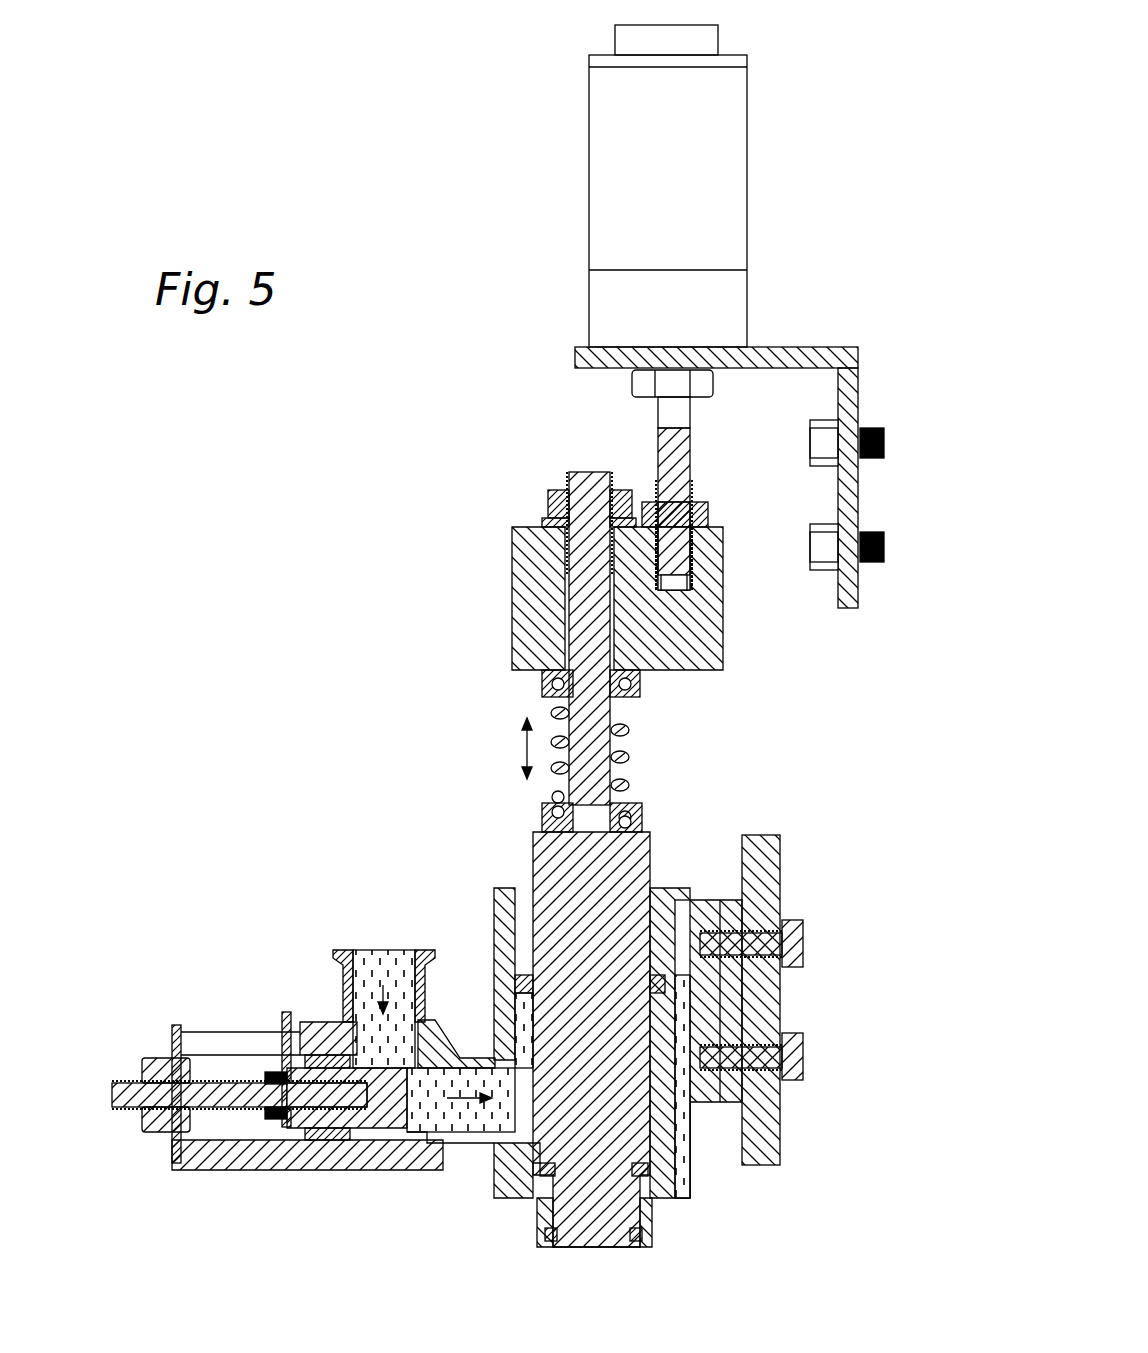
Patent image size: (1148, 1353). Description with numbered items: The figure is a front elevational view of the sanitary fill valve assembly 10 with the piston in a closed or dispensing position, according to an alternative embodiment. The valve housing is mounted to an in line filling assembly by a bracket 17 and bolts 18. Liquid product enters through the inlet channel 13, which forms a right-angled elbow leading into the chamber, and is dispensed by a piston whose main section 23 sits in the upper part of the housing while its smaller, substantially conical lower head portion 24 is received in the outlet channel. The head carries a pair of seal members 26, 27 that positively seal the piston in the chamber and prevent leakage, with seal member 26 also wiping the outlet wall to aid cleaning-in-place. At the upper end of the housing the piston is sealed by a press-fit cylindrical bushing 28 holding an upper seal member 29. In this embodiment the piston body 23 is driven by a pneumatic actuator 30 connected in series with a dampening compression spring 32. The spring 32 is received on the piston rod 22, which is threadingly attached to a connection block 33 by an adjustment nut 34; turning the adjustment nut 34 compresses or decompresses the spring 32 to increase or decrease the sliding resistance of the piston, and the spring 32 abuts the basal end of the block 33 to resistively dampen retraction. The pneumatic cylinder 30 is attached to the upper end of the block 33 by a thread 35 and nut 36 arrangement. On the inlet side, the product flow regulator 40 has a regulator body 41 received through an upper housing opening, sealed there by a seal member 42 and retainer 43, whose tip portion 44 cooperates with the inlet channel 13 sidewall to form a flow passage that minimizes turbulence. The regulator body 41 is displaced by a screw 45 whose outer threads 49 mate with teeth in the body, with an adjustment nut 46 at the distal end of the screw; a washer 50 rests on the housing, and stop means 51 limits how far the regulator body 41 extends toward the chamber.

The sanitary fill valve assembly 10 is at (212, 856).
The inlet passage or channel 13 is at (343, 982).
The bracket 17 is at (781, 1150).
The bolts 18 is at (804, 1056).
The piston rod 22 is at (572, 486).
The main section of piston body 23 is at (534, 872).
The lower head portion 24 is at (608, 1249).
The seal member 26 is at (540, 1237).
The seal member 27 is at (647, 1172).
The cylindrical bushing 28 is at (660, 892).
The upper seal member 29 is at (522, 982).
The pneumatic actuator 30 is at (590, 238).
The compression spring 32 is at (630, 758).
The connection block 33 is at (516, 592).
The adjustment nut 34 is at (541, 500).
The thread 35 is at (655, 452).
The nut 36 is at (700, 512).
The product flow regulator 40 is at (138, 1191).
The regulator body 41 is at (375, 1172).
The seal member 42 is at (335, 1172).
The retainer 43 is at (288, 1172).
The tip portion 44 is at (412, 1078).
The screw 45 is at (113, 1085).
The adjustment nut 46 is at (150, 1058).
The outer threads 49 is at (233, 1056).
The washer 50 is at (173, 1172).
The stop means 51 is at (285, 1010).